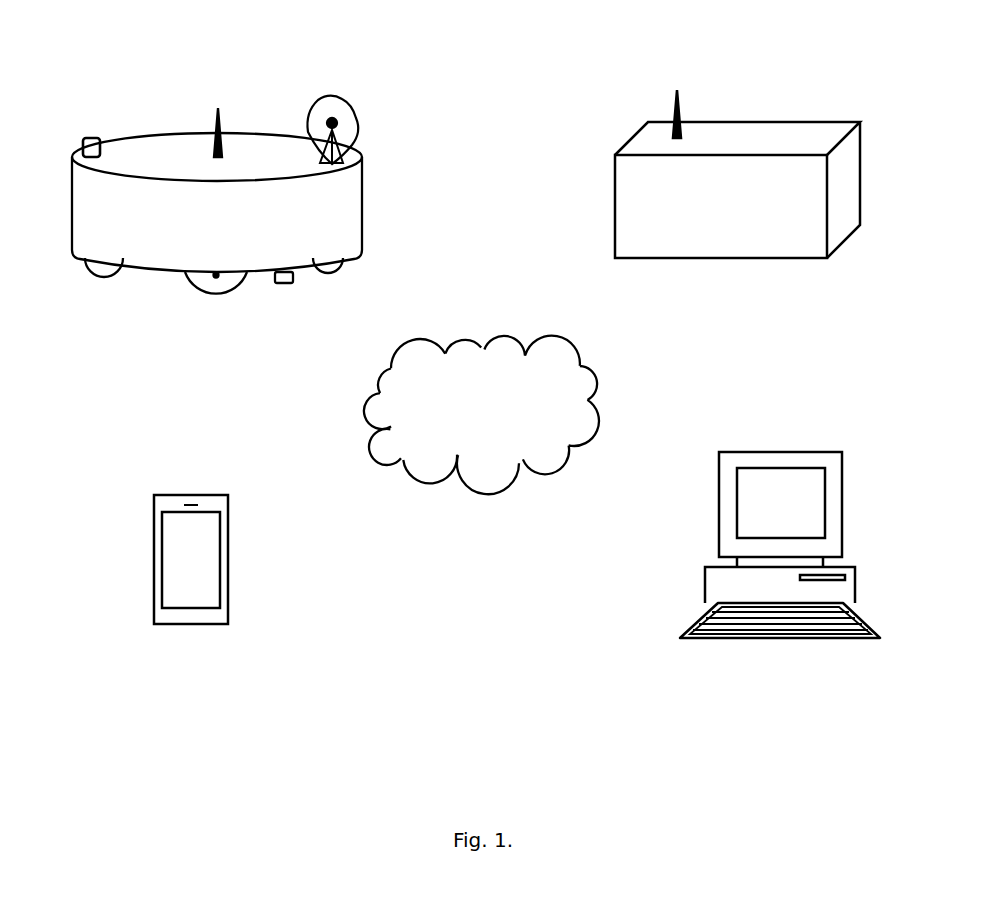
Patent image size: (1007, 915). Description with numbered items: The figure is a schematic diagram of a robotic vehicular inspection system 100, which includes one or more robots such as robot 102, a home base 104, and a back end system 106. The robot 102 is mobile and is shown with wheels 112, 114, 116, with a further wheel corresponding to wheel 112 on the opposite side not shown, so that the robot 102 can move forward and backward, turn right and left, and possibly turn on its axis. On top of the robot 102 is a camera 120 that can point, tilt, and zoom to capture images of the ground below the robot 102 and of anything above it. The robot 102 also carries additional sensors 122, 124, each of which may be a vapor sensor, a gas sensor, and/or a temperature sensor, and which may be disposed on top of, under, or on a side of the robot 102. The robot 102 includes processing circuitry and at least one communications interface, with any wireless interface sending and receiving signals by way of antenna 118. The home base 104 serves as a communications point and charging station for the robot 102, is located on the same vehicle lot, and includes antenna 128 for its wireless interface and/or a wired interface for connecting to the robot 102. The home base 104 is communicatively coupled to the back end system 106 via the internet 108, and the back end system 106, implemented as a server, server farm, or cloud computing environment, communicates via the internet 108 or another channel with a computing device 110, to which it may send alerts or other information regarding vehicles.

The robotic vehicular inspection system 100 is at (357, 704).
The robot 102 is at (360, 210).
The home base 104 is at (667, 260).
The back end system 106 is at (842, 500).
The internet 108 is at (485, 493).
The computing device 110 is at (228, 582).
The wheel 112 is at (205, 293).
The wheel 114 is at (105, 277).
The wheel 116 is at (340, 270).
The antenna 118 is at (213, 120).
The camera 120 is at (317, 103).
The sensor 122 is at (88, 140).
The sensor 124 is at (287, 285).
The antenna 128 is at (675, 115).